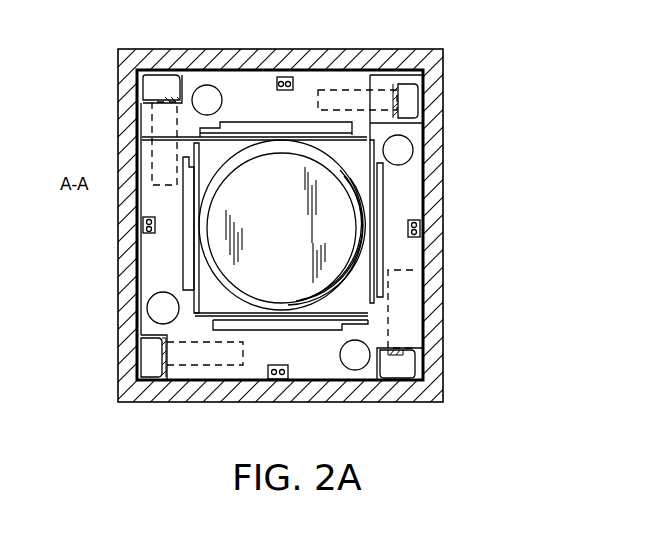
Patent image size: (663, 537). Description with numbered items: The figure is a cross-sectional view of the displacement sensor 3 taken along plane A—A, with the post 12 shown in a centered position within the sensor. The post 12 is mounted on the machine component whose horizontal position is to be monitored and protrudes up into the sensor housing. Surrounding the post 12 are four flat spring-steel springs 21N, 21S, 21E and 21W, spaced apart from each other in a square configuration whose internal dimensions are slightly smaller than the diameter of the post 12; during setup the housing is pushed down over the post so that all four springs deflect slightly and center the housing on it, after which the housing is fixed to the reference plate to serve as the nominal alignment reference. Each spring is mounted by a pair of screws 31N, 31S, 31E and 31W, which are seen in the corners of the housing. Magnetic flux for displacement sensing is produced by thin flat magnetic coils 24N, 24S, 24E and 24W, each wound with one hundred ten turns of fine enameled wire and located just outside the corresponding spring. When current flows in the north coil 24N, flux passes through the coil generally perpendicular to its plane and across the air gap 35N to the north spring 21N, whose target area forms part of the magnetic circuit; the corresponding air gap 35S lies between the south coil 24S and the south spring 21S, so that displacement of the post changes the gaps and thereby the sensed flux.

The displacement sensor 3 is at (455, 107).
The post 12 is at (235, 153).
The spring 21N is at (163, 133).
The spring 21W is at (196, 188).
The spring 21E is at (375, 184).
The spring 21S is at (237, 310).
The magnetic coil 24N is at (305, 123).
The magnetic coil 24W is at (183, 272).
The magnetic coil 24E is at (384, 259).
The magnetic coil 24S is at (263, 330).
The screws 31N is at (162, 77).
The screws 31E is at (408, 83).
The screws 31W is at (150, 352).
The screws 31S is at (413, 367).
The air gap 35N is at (272, 130).
The air gap 35S is at (330, 345).